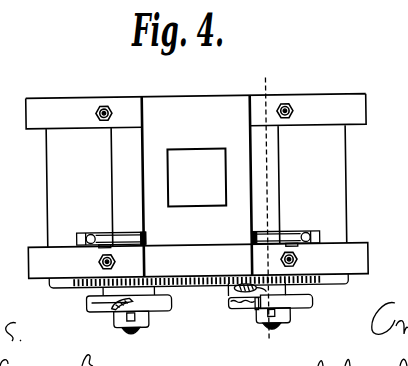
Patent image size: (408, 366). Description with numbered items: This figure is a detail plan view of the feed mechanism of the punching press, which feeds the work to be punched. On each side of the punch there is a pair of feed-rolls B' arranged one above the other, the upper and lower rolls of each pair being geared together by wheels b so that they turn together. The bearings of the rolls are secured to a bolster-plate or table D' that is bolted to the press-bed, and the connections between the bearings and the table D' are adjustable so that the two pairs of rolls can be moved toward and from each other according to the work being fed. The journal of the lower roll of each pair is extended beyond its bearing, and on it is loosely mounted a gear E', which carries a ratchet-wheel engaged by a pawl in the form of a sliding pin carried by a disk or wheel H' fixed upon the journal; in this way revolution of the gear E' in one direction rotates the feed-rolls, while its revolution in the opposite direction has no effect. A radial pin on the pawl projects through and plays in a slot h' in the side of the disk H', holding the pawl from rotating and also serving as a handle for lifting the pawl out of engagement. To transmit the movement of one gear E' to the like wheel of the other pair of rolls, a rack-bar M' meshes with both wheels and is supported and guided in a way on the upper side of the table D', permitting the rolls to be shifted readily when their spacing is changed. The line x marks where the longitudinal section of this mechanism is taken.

The feed-rolls B' is at (197, 171).
The bolster-plate or table D' is at (197, 185).
The gear E' is at (198, 261).
The rack-bar M' is at (198, 290).
The wheels b is at (132, 232).
The slot h' is at (193, 305).
The pawl g' is at (189, 305).
The disk or wheel H' is at (216, 320).
The line x x is at (266, 207).